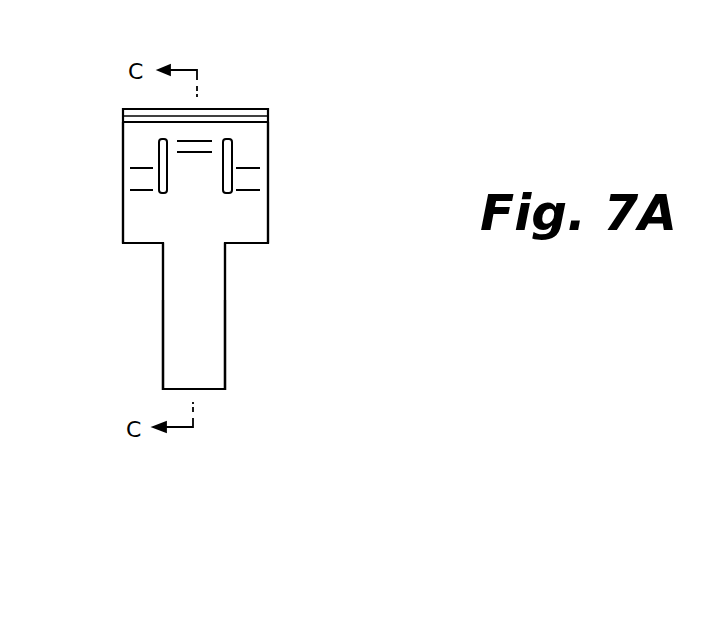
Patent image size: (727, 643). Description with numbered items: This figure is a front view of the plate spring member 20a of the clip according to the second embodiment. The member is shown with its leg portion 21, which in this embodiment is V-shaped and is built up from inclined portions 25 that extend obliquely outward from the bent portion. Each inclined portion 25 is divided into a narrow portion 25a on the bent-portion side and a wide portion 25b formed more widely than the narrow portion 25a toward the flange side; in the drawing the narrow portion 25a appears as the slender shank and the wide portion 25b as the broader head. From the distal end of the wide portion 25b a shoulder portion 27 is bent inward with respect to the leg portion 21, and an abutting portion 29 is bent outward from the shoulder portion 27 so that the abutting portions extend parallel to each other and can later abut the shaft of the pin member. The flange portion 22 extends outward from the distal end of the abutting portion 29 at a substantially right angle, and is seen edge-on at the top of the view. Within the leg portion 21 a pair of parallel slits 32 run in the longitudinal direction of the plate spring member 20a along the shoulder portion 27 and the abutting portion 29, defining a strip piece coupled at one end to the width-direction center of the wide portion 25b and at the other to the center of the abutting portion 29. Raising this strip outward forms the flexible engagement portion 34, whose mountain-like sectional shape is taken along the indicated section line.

The plate spring member 20a is at (291, 98).
The leg portion 21 is at (237, 369).
The flange portion 22 is at (243, 118).
The abutting portion 29 is at (253, 133).
The slits 32 is at (159, 148).
The engagement portion 34 is at (181, 173).
The shoulder portion 27 is at (255, 178).
The inclined portion 25 is at (392, 272).
The narrow portion 25a is at (211, 334).
The wide portion 25b is at (242, 243).